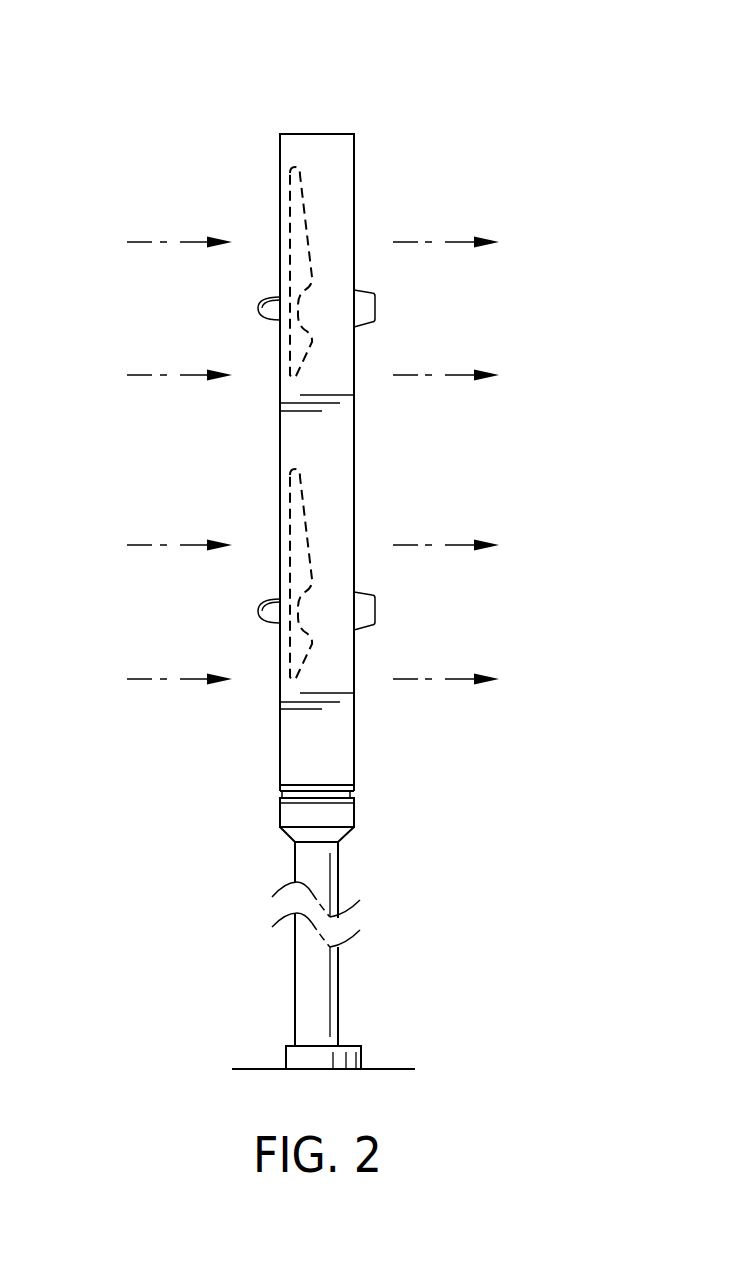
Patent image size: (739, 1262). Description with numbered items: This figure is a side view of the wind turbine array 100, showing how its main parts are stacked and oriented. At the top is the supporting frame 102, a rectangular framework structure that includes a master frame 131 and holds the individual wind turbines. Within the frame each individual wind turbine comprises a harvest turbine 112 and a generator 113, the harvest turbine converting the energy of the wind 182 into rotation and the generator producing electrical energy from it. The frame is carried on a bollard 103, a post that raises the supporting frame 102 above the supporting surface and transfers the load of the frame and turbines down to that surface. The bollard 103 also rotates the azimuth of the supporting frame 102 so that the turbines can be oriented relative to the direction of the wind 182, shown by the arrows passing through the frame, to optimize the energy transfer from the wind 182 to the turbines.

The wind turbine array 100 is at (145, 110).
The supporting frame 102 is at (263, 121).
The master frame 131 is at (328, 153).
The harvest turbine 112 is at (297, 257).
The generator 113 is at (373, 308).
The bollard 103 is at (337, 986).
The wind 182 is at (428, 242).